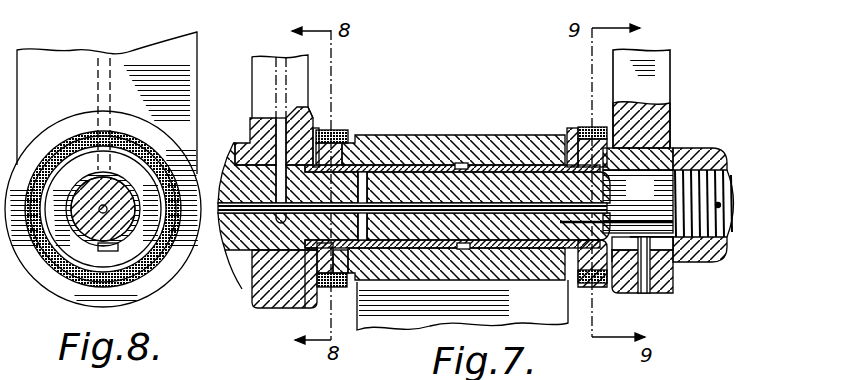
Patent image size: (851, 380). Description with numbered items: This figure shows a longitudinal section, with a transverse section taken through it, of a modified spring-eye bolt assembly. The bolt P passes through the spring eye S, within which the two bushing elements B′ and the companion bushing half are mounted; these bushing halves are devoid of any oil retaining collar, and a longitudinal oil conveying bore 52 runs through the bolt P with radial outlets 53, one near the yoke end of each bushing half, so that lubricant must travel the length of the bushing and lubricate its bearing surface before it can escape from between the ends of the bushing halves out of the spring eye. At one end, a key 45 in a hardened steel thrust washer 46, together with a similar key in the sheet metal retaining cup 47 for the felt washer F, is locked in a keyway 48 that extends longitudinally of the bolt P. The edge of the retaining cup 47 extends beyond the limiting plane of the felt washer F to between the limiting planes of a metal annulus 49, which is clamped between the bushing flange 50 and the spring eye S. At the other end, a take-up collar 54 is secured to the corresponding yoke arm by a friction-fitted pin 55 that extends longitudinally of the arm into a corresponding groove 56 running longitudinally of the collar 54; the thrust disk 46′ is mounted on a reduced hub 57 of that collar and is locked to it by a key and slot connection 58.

In FIG. 8, the key 45 is at (103, 214).
In FIG. 7, the key 45 is at (322, 262).
In FIG. 8, the hardened steel thrust washer 46 is at (143, 174).
In FIG. 7, the hardened steel thrust washer 46 is at (340, 143).
In FIG. 7, the thrust disk 46′ is at (672, 127).
In FIG. 8, the sheet metal retaining cup 47 is at (53, 257).
In FIG. 7, the sheet metal retaining cup 47 is at (330, 288).
In FIG. 7, the keyway 48 is at (282, 293).
In FIG. 7, the metal annulus 49 is at (352, 262).
In FIG. 7, the bushing flange 50 is at (352, 165).
In FIG. 8, the longitudinal oil conveying bore 52 is at (88, 175).
In FIG. 7, the longitudinal oil conveying bore 52 is at (533, 214).
In FIG. 7, the radial outlets 53 is at (372, 190).
In FIG. 7, the take-up collar 54 is at (673, 136).
In FIG. 7, the friction-fitted pin 55 is at (672, 285).
In FIG. 7, the groove 56 is at (673, 264).
In FIG. 7, the reduced hub 57 is at (640, 187).
In FIG. 7, the key and slot connection 58 is at (608, 252).
In FIG. 8, the felt washer F is at (38, 238).
In FIG. 7, the felt washer F is at (330, 135).
In FIG. 8, the bolt P is at (130, 198).
In FIG. 7, the bolt P is at (496, 178).
In FIG. 7, the spring eye S is at (465, 142).
In FIG. 7, the bushing element B′ is at (407, 166).